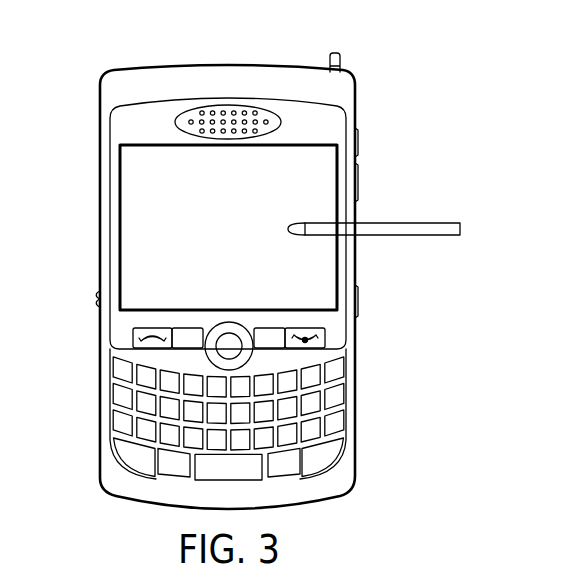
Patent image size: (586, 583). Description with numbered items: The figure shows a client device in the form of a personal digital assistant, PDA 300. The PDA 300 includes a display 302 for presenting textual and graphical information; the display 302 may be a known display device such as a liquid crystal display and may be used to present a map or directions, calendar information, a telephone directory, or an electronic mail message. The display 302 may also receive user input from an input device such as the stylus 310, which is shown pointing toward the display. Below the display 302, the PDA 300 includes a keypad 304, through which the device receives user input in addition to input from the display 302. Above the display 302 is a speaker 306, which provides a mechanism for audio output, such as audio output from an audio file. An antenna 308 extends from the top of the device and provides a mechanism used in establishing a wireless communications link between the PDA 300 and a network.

The PDA 300 is at (100, 182).
The display 302 is at (249, 243).
The keypad 304 is at (373, 358).
The speaker 306 is at (229, 106).
The antenna 308 is at (340, 73).
The stylus 310 is at (461, 229).